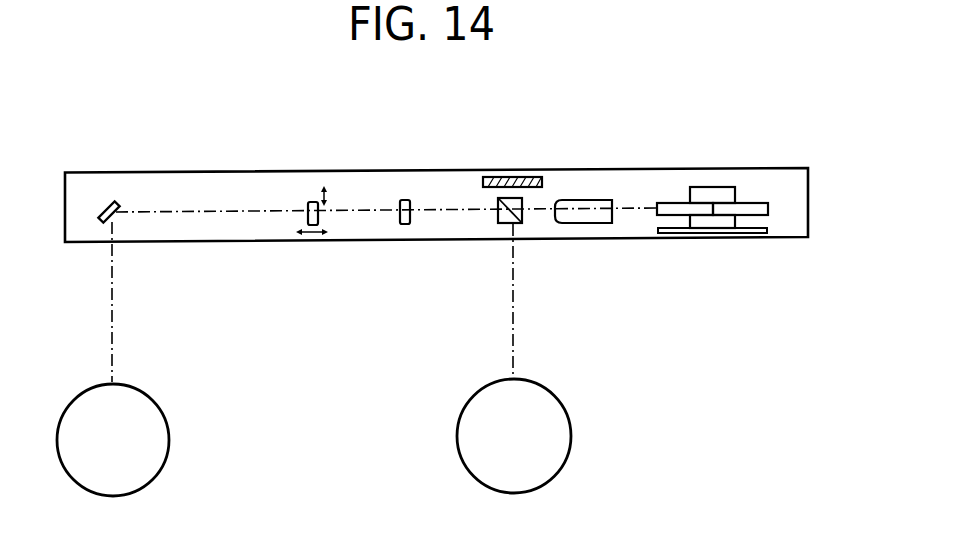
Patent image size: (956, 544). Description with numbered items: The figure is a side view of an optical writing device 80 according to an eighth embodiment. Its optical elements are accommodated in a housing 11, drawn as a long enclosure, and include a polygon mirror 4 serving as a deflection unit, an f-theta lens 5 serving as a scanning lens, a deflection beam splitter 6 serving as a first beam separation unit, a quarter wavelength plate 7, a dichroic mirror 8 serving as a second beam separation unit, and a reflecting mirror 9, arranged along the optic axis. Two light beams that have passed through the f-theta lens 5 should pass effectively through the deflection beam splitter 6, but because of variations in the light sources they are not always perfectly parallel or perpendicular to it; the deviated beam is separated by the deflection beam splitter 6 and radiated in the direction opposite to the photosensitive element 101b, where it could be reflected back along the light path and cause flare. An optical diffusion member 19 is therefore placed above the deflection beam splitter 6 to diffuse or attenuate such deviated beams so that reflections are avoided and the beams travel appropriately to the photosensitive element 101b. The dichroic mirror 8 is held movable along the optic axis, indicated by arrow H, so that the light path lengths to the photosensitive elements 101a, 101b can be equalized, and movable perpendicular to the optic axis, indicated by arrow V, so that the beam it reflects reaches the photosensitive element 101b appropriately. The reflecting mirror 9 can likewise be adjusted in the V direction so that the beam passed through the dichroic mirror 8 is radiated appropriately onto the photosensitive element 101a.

The optical writing device 80 is at (208, 128).
The reflecting mirror 9 is at (105, 202).
The dichroic mirror 8 is at (313, 202).
The 1/4 wavelength plate 7 is at (406, 200).
The optical diffusion member 19 is at (514, 177).
The deflection beam splitter 6 is at (518, 224).
The f-theta lens 5 is at (597, 200).
The housing 11 is at (689, 168).
The polygon mirror 4 is at (724, 187).
The photosensitive element 101a is at (169, 442).
The photosensitive element 101b is at (571, 437).